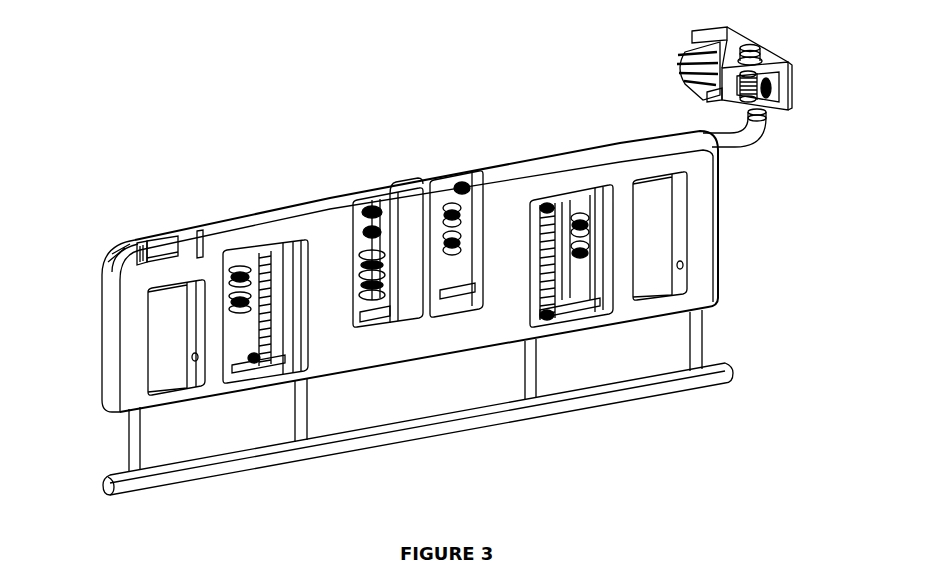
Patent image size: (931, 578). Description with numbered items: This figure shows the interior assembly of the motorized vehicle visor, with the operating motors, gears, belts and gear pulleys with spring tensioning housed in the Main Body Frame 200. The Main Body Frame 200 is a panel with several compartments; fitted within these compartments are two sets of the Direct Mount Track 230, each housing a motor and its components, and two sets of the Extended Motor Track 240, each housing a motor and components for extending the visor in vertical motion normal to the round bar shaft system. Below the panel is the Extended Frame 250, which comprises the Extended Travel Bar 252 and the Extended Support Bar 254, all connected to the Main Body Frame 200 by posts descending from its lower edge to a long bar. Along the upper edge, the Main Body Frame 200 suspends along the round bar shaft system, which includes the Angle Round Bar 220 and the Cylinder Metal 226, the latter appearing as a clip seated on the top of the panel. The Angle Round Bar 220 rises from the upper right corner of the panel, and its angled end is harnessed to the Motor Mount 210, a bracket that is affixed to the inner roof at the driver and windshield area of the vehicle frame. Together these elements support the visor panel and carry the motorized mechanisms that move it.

The Main Body Frame 200 is at (703, 249).
The Motor Mount 210 is at (790, 87).
The Angle Round Bar 220 is at (732, 138).
The Cylinder Metal 226 is at (163, 245).
The Direct Mount Track 230 is at (350, 263).
The Extended Motor Track 240 is at (573, 192).
The Extended Frame 250 is at (523, 420).
The Extended Travel Bar 252 is at (307, 400).
The Extended Support Bar 254 is at (135, 452).